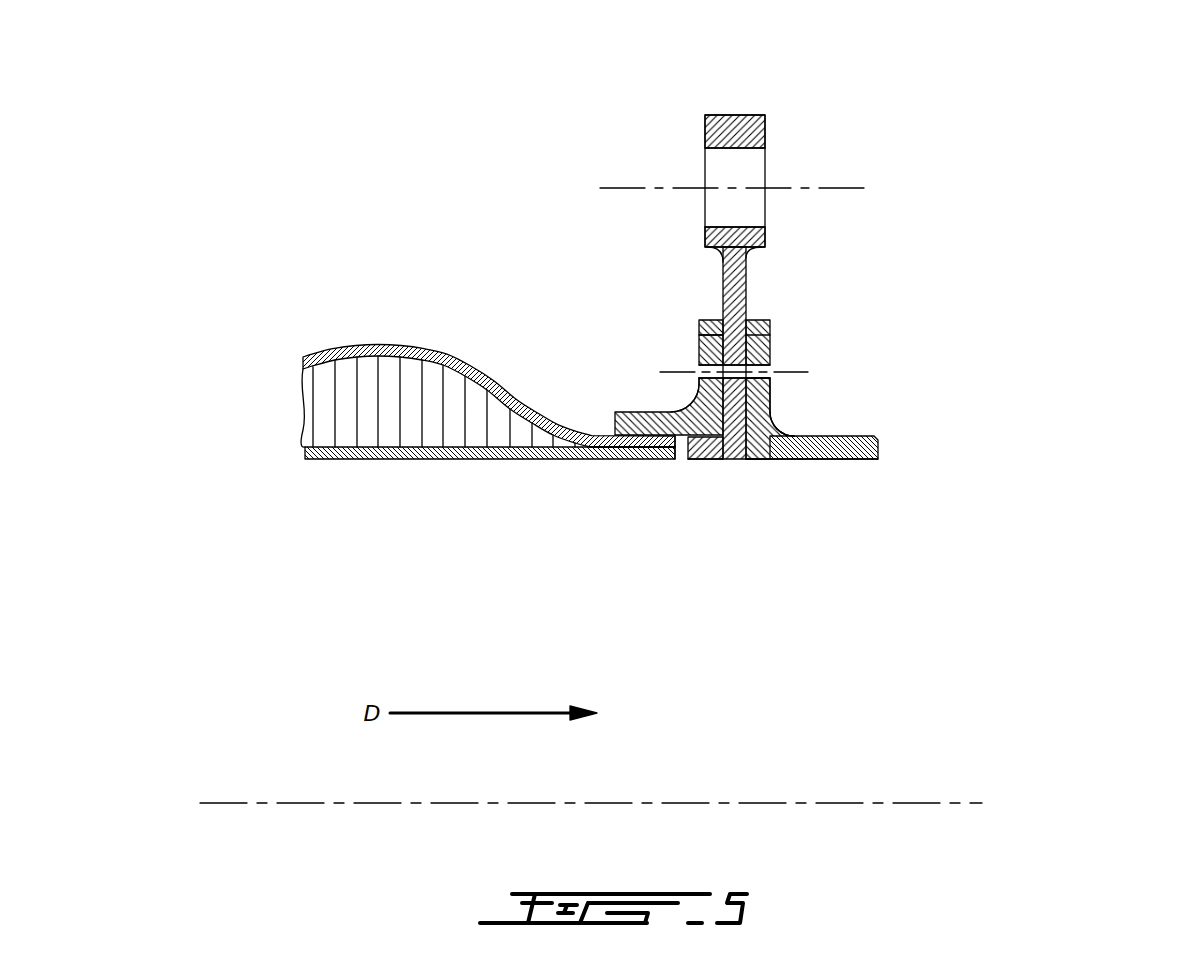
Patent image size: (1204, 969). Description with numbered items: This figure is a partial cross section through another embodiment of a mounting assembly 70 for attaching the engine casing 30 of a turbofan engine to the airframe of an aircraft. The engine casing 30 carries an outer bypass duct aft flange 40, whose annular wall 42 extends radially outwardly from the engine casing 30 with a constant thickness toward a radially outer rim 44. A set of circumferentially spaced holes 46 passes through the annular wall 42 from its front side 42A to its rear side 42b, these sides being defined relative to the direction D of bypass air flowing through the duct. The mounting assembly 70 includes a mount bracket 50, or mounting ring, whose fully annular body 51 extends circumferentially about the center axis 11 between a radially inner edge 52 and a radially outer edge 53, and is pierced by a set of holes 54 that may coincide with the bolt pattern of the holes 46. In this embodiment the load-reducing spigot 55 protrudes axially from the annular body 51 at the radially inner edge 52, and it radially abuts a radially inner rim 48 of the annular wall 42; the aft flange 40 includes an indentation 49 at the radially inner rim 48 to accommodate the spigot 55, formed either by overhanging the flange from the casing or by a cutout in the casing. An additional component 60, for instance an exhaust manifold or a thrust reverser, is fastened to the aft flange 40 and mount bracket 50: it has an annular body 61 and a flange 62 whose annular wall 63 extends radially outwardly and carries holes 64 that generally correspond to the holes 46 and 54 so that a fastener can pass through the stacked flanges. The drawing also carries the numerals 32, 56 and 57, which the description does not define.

The center axis 11 is at (962, 803).
The engine casing 30 is at (310, 387).
The outer skin 32 is at (472, 390).
The outer bypass duct aft flange 40 is at (625, 461).
The annular wall 42 is at (698, 408).
The front side 42A is at (697, 392).
The rear side 42b is at (712, 460).
The radially outer rim 44 is at (699, 335).
The holes 46 is at (699, 365).
The radially inner rim 48 is at (662, 461).
The indentation 49 is at (672, 475).
The mount bracket 50 is at (793, 273).
The annular body 51 is at (770, 335).
The radially inner edge 52 is at (735, 460).
The radially outer edge 53 is at (735, 115).
The holes 54 is at (770, 393).
The load-reducing spigot 55 is at (693, 460).
The fastener head 56 is at (795, 167).
The bore 57 is at (717, 168).
The additional component 60 is at (905, 448).
The annular body 61 is at (843, 460).
The flange 62 is at (780, 478).
The annular wall 63 is at (770, 402).
The holes 64 is at (760, 367).
The mounting assembly 70 is at (1045, 192).